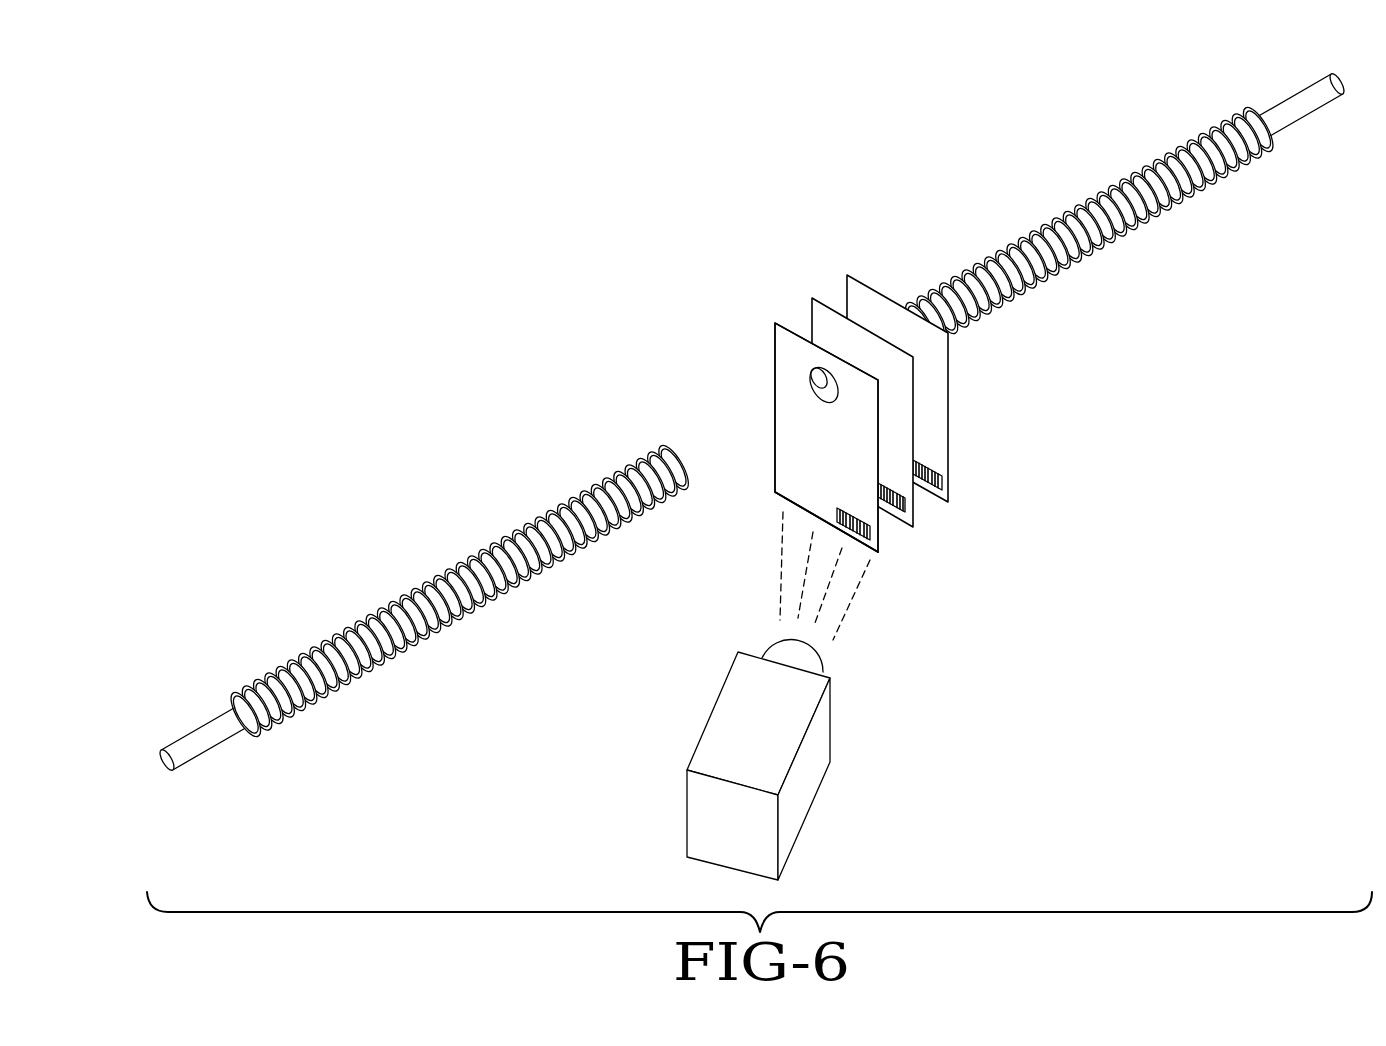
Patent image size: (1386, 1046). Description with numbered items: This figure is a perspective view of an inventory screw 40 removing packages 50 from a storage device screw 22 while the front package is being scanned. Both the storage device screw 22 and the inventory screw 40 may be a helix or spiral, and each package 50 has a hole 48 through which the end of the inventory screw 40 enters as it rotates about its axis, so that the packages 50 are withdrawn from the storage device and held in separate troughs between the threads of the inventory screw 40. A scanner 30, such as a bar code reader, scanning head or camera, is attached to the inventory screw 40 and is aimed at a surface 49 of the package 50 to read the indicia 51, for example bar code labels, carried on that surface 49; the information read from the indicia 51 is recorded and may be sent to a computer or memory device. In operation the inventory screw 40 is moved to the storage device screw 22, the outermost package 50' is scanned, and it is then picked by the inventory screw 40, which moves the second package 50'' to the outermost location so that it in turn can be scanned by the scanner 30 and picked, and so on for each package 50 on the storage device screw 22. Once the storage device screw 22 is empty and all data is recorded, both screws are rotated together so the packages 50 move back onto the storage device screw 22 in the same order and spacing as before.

The storage device screw 22 is at (1187, 200).
The inventory screw 40 is at (388, 600).
The scanner 30 is at (707, 725).
The packages 50 is at (841, 409).
The outermost package 50' is at (841, 435).
The second package 50'' is at (838, 375).
The holes 48 is at (822, 400).
The surface 49 is at (847, 453).
The indicia 51 is at (785, 495).